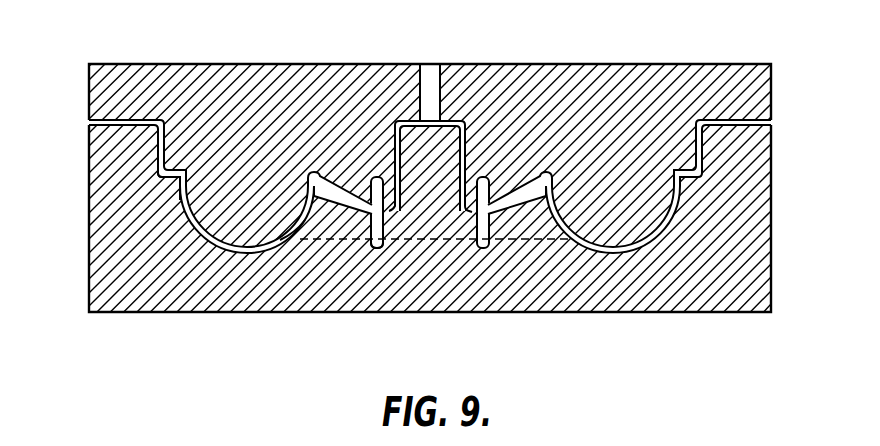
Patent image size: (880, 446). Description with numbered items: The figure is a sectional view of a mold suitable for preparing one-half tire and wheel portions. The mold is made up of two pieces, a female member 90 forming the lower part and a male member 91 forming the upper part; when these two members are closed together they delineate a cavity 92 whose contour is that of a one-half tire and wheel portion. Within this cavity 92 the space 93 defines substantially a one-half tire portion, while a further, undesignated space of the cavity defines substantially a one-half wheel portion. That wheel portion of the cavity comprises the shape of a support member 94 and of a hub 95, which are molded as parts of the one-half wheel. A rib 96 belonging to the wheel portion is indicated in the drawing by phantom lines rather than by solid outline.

The female member 90 is at (205, 313).
The male member 91 is at (225, 64).
The cavity 92 is at (313, 172).
The space 93 is at (183, 207).
The support member 94 is at (343, 204).
The hub 95 is at (377, 248).
The rib 96 is at (300, 230).